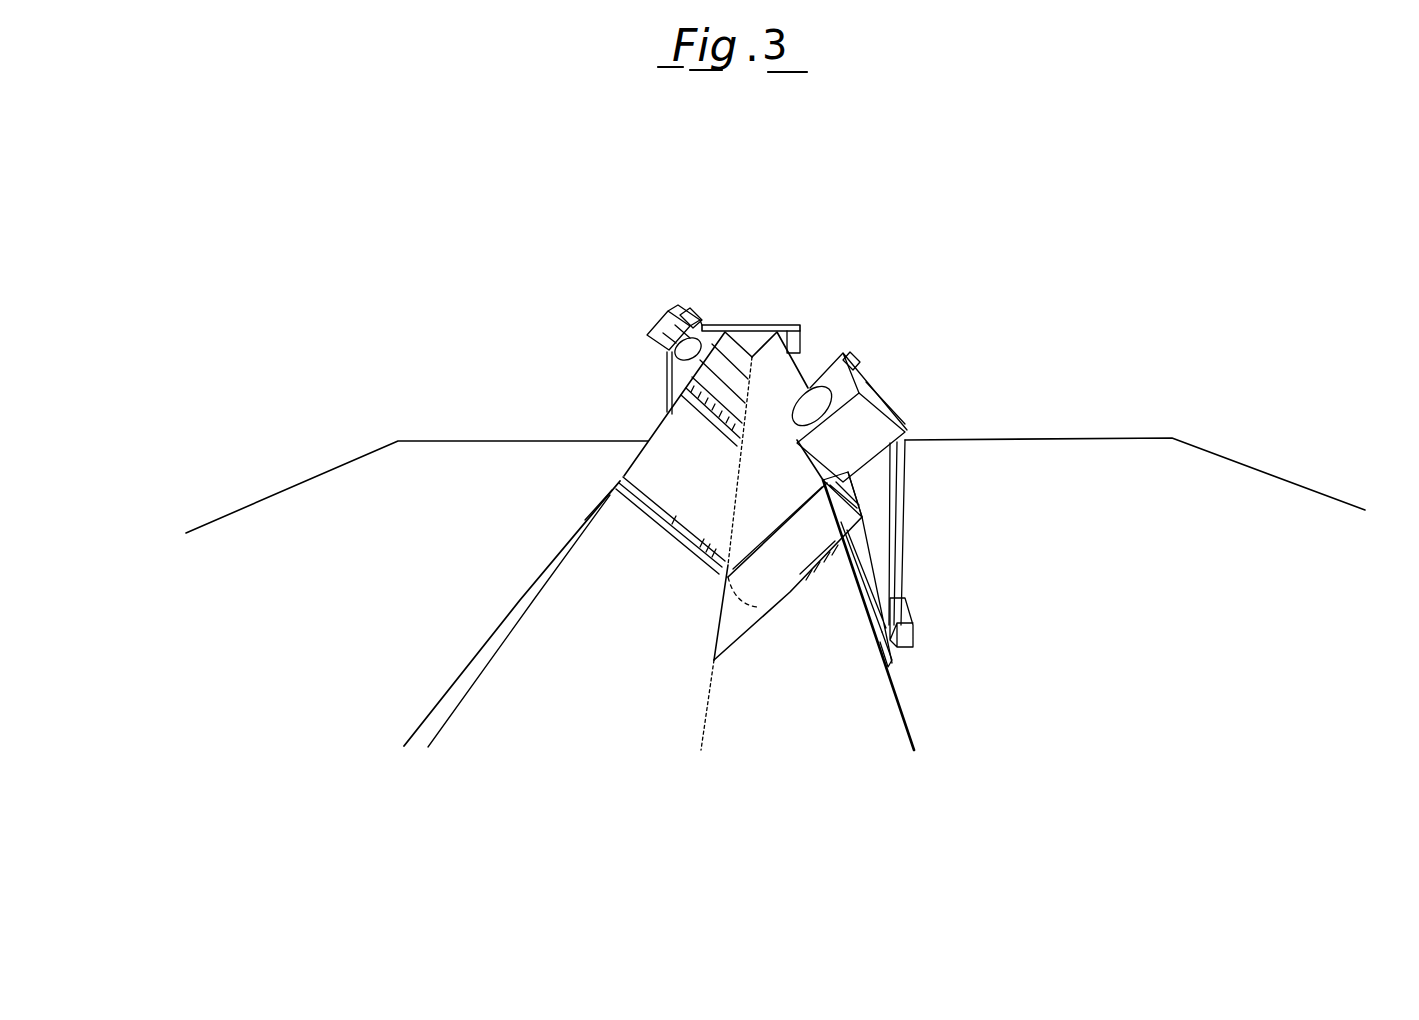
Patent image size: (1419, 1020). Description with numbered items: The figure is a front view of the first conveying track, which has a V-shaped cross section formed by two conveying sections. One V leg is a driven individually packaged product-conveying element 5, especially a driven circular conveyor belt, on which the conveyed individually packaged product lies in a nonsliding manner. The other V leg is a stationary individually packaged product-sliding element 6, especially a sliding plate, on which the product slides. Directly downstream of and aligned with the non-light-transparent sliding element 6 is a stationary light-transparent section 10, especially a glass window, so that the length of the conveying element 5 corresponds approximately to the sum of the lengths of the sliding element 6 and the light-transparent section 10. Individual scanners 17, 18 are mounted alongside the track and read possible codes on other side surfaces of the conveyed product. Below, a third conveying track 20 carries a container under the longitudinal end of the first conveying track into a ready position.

The individually packaged product-conveying element 5 is at (786, 480).
The individually packaged product-sliding element 6 is at (702, 480).
The light-transparent section 10 is at (748, 624).
The individual scanner 17 is at (700, 330).
The individual scanner 18 is at (673, 340).
The third conveying track 20 is at (800, 330).